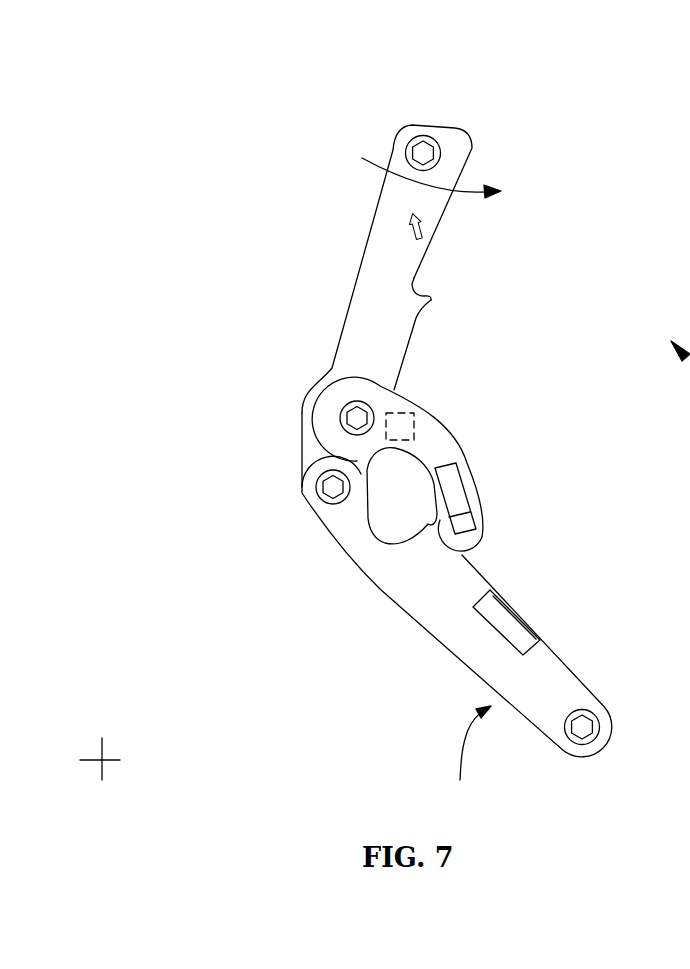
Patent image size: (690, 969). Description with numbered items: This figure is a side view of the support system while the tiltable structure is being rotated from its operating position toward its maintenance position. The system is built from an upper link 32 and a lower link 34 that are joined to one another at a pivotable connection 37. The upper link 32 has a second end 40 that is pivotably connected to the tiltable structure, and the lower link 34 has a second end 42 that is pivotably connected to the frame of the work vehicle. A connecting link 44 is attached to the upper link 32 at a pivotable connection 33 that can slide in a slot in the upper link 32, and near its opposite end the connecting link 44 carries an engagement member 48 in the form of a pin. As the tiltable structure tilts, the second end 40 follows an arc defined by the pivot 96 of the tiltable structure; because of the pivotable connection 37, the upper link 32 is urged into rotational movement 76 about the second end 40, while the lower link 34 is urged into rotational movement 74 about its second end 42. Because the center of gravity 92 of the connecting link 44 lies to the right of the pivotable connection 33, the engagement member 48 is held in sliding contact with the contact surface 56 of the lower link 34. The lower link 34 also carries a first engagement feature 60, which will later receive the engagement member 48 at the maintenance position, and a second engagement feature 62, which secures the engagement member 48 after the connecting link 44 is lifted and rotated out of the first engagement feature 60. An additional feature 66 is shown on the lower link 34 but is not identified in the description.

The upper link 32 is at (408, 156).
The pivotable connection 33 is at (343, 407).
The lower link 34 is at (533, 727).
The pivotable connection 37 is at (302, 493).
The second end 40 is at (452, 131).
The second end 42 is at (598, 701).
The connecting link 44 is at (468, 460).
The engagement member 48 is at (483, 537).
The contact surface 56 is at (490, 580).
The first engagement feature 60 is at (427, 524).
The second engagement feature 62 is at (427, 290).
The slot 66 is at (524, 620).
The rotational movement 74 is at (460, 747).
The rotational movement 76 is at (463, 196).
The center of gravity 92 is at (413, 410).
The pivot 96 is at (102, 760).